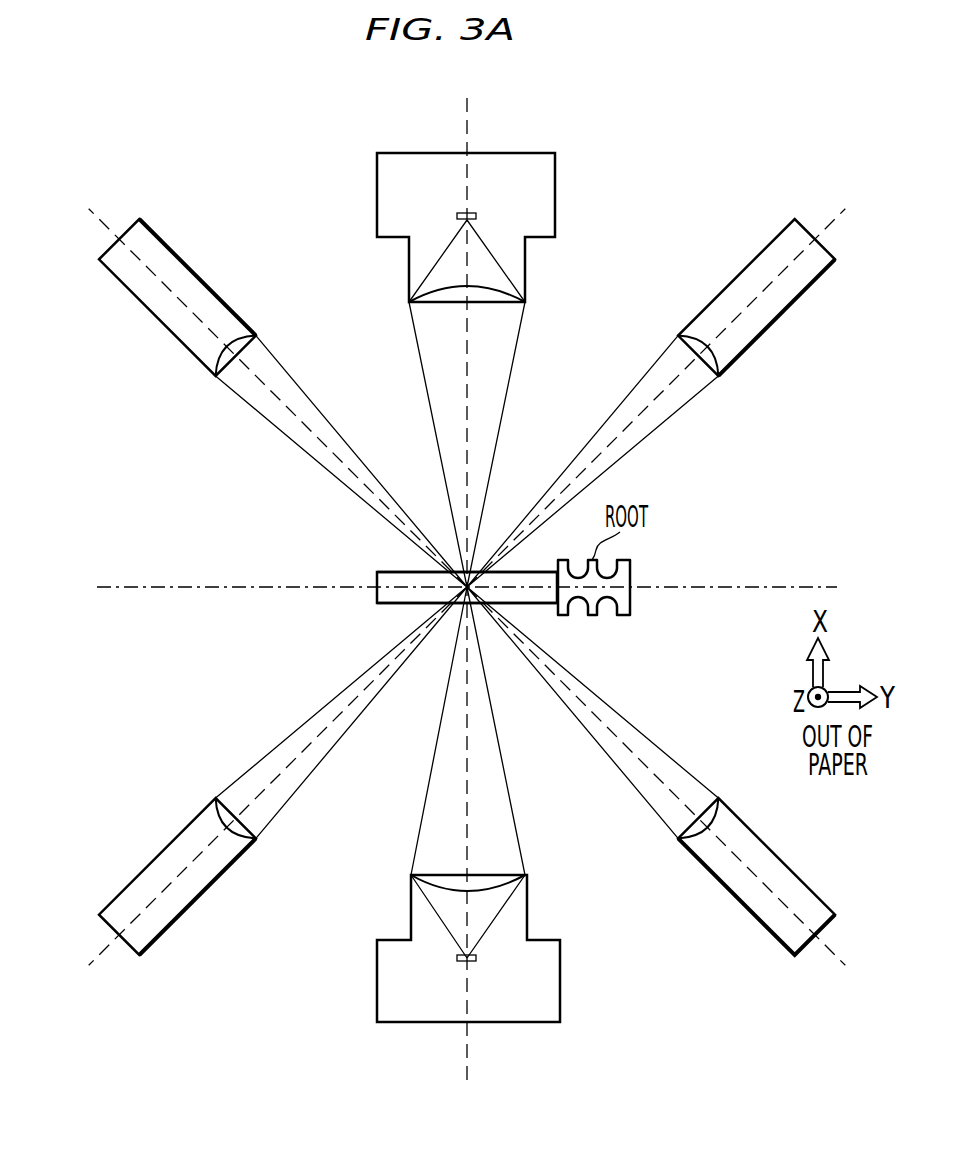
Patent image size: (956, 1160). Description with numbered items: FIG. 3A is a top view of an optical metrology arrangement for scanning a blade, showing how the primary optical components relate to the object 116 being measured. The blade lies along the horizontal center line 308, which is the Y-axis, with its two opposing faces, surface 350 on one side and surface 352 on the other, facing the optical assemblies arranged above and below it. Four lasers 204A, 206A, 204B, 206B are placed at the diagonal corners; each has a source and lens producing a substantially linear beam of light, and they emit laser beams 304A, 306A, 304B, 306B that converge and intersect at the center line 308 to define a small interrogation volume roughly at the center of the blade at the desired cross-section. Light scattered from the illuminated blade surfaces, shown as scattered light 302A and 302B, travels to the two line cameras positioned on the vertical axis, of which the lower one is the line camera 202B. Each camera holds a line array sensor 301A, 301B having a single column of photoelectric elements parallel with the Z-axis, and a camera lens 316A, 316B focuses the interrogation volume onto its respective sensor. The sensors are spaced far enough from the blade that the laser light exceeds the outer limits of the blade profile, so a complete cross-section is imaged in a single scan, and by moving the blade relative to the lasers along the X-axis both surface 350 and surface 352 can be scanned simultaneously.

The object 116 is at (375, 613).
The center line 308 is at (140, 587).
The surface 350 is at (400, 572).
The surface 352 is at (538, 606).
The line camera 202B is at (583, 968).
The laser 204A is at (255, 288).
The laser 204B is at (214, 921).
The laser 206A is at (779, 358).
The laser 206B is at (720, 911).
The line array sensor 301A is at (457, 215).
The line array sensor 301B is at (462, 963).
The scattered light 302A is at (493, 407).
The scattered light 302B is at (518, 828).
The laser beam 304A is at (268, 425).
The laser beam 304B is at (278, 748).
The laser beam 306A is at (628, 432).
The laser beam 306B is at (648, 742).
The camera lens 316A is at (500, 320).
The camera lens 316B is at (525, 876).